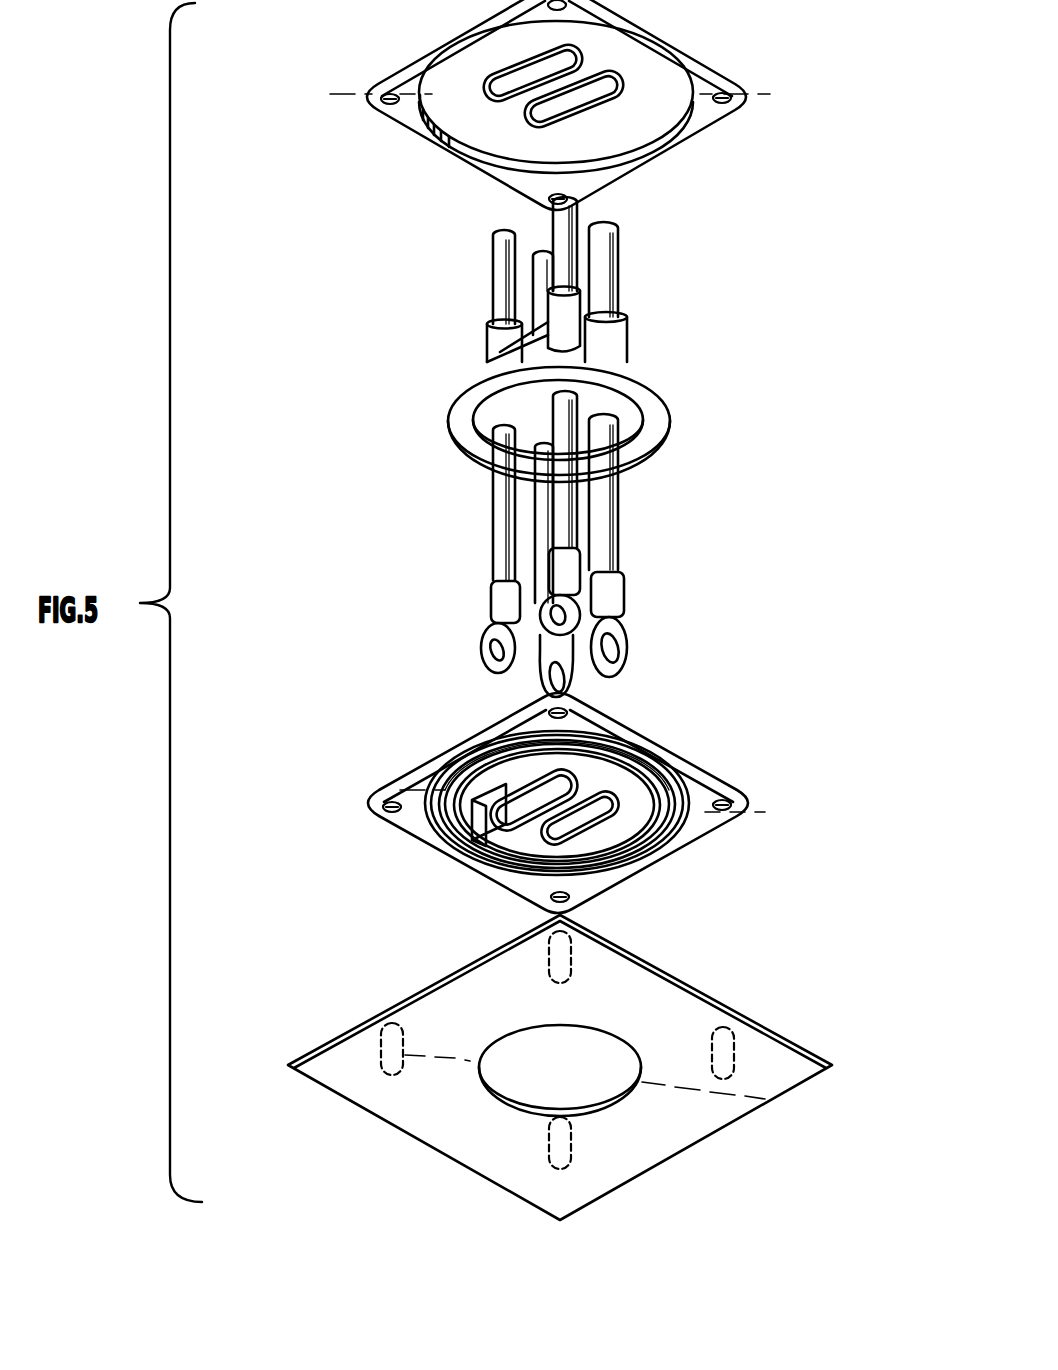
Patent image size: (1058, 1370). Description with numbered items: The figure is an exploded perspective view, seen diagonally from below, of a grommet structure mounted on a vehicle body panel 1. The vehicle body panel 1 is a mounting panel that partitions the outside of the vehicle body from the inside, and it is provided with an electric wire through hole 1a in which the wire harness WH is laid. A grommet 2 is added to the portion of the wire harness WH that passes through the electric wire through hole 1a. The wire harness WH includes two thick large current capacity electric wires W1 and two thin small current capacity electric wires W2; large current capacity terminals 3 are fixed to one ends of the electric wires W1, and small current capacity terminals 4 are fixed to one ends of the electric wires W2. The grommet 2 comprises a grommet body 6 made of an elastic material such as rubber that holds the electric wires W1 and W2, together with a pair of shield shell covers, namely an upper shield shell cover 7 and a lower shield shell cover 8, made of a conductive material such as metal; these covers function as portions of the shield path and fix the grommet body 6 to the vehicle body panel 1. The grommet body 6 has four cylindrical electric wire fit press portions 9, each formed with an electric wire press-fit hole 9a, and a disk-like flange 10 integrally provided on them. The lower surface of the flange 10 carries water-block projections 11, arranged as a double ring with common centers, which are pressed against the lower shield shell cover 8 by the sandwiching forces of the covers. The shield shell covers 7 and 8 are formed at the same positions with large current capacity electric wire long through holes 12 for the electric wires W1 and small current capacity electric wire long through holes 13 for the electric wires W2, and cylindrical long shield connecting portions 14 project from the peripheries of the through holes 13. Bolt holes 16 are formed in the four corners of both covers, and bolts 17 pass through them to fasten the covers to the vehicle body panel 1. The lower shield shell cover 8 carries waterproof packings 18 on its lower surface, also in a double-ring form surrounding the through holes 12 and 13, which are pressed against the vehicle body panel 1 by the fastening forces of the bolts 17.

The vehicle body panel 1 is at (563, 1077).
The electric wire through hole 1a is at (574, 1136).
The grommet 2 is at (505, 463).
The large current capacity terminals 3 is at (625, 634).
The small current capacity terminals 4 is at (489, 610).
The grommet body 6 is at (544, 379).
The upper shield shell cover 7 is at (515, 105).
The lower shield shell cover 8 is at (511, 803).
The electric wire fit press portions 9 is at (548, 338).
The electric wire press-fit hole 9a is at (630, 314).
The flange 10 is at (516, 424).
The water-block projections 11 is at (612, 420).
The large current capacity electric wire long through holes 12 is at (633, 454).
The small current capacity electric wire long through holes 13 is at (487, 454).
The shield connecting portions 14 is at (425, 831).
The bolt holes 16 is at (577, 463).
The bolts 17 is at (571, 1061).
The waterproof packings 18 is at (592, 744).
The large current capacity electric wires W1 is at (626, 412).
The small current capacity electric wires W2 is at (478, 388).
The wire harness WH is at (617, 447).